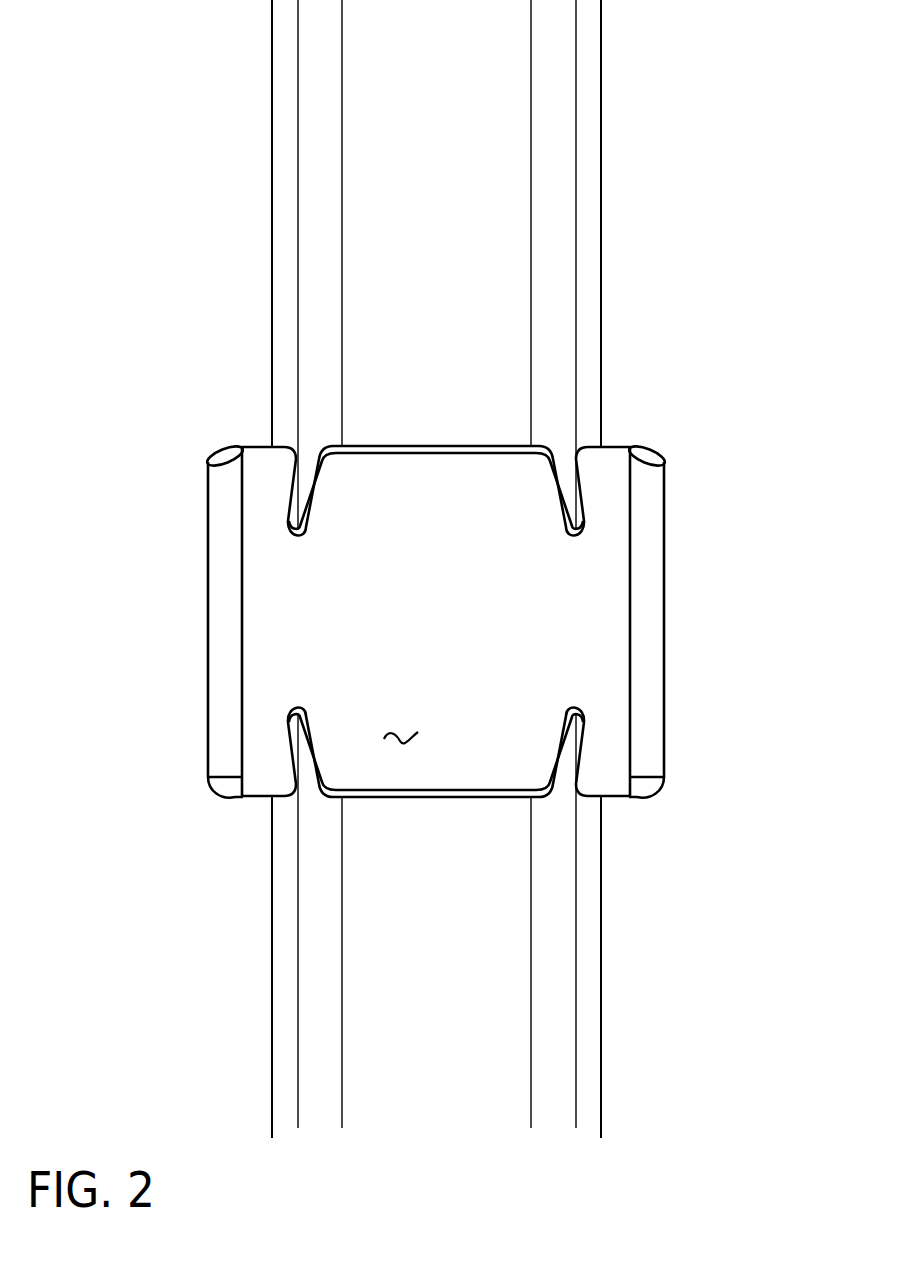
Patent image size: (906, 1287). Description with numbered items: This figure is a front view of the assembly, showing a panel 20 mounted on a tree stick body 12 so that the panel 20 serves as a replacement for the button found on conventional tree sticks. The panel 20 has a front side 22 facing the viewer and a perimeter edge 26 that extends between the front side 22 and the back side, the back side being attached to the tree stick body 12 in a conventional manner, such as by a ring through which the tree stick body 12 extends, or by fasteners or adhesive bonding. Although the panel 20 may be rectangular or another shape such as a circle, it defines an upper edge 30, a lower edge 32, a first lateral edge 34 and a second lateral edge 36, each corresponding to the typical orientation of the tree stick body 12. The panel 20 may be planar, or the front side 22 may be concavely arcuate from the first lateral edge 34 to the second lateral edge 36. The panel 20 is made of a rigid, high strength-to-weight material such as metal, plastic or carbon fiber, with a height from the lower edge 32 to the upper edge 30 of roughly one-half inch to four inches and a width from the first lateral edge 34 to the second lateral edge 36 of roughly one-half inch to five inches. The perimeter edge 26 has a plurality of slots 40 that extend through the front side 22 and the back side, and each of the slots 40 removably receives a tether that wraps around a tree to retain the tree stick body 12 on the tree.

The tree stick body 12 is at (600, 215).
The panel 20 is at (435, 568).
The front side 22 is at (395, 748).
The perimeter edge 26 is at (223, 447).
The upper edge 30 is at (413, 447).
The lower edge 32 is at (455, 793).
The first lateral edge 34 is at (163, 575).
The second lateral edge 36 is at (673, 447).
The slots 40 is at (297, 532).